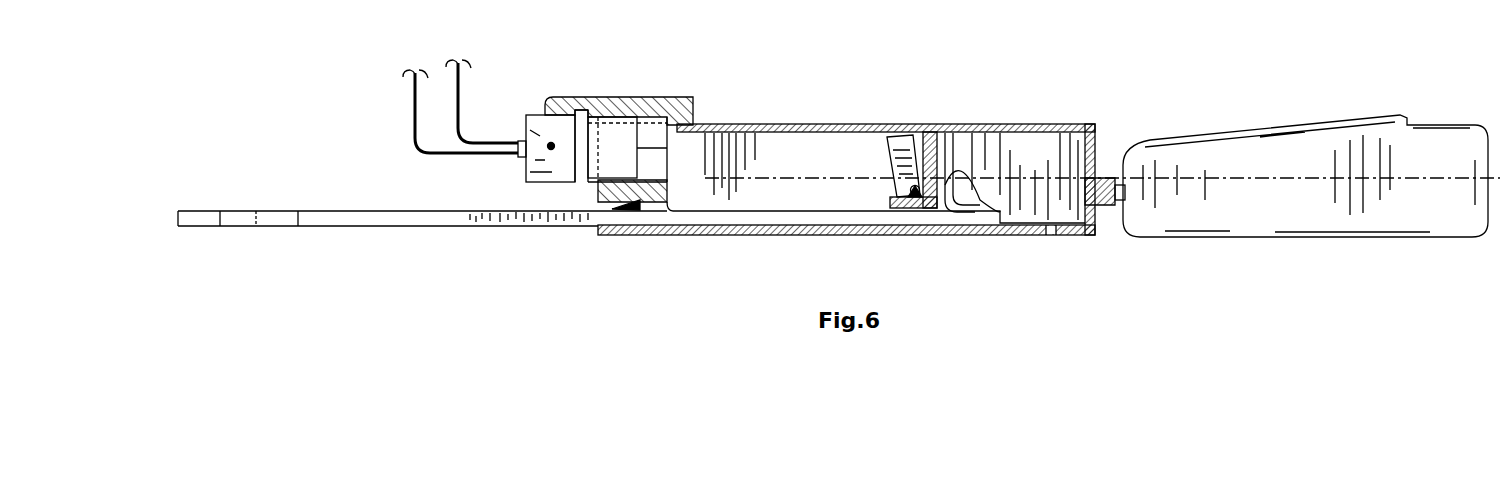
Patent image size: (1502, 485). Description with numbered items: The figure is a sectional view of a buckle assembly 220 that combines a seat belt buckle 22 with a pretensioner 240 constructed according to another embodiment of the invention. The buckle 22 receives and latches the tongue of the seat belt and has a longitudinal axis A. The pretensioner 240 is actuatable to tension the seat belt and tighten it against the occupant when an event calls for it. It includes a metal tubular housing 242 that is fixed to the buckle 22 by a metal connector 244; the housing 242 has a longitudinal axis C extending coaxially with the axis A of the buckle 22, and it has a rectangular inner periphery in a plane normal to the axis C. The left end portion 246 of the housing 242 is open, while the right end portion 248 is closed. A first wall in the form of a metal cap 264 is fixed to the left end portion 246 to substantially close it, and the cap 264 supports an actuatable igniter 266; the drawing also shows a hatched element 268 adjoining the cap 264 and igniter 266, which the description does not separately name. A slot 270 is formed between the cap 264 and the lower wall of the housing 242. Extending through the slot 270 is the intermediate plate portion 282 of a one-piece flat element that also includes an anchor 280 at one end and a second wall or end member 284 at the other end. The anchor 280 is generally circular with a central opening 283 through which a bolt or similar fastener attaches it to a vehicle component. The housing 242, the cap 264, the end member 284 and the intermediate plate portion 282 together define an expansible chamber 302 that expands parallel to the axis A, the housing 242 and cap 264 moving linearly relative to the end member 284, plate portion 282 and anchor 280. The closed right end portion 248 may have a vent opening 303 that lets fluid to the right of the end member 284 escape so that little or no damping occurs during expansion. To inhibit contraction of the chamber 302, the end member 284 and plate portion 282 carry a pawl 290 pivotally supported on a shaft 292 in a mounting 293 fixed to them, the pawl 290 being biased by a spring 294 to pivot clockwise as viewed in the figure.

The buckle 22 is at (1277, 113).
The buckle assembly 220 is at (1118, 85).
The pretensioner 240 is at (860, 183).
The tubular housing 242 is at (795, 123).
The connector 244 is at (1105, 182).
The left end portion 246 is at (616, 238).
The right end portion 248 is at (1040, 235).
The cap 264 is at (535, 104).
The igniter 266 is at (540, 136).
The insulating sleeve 268 is at (640, 135).
The slot 270 is at (648, 206).
The anchor 280 is at (210, 222).
The intermediate plate portion 282 is at (631, 225).
The central opening 283 is at (218, 212).
The end member 284 is at (947, 188).
The pawl 290 is at (897, 136).
The shaft 292 is at (915, 200).
The mounting 293 is at (943, 186).
The spring 294 is at (905, 206).
The expansible chamber 302 is at (860, 172).
The vent opening 303 is at (1062, 234).
The longitudinal axis A is at (1432, 178).
The longitudinal axis C is at (968, 170).